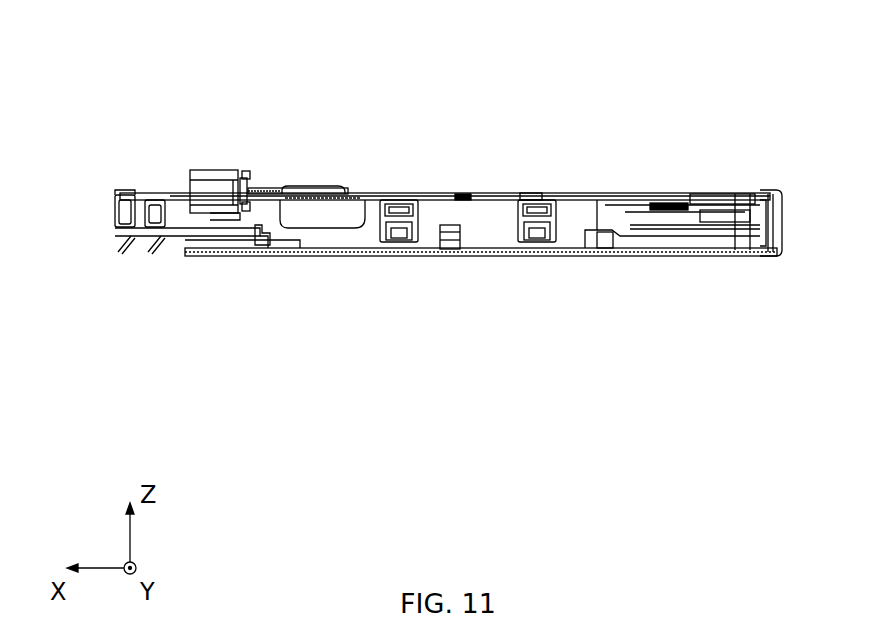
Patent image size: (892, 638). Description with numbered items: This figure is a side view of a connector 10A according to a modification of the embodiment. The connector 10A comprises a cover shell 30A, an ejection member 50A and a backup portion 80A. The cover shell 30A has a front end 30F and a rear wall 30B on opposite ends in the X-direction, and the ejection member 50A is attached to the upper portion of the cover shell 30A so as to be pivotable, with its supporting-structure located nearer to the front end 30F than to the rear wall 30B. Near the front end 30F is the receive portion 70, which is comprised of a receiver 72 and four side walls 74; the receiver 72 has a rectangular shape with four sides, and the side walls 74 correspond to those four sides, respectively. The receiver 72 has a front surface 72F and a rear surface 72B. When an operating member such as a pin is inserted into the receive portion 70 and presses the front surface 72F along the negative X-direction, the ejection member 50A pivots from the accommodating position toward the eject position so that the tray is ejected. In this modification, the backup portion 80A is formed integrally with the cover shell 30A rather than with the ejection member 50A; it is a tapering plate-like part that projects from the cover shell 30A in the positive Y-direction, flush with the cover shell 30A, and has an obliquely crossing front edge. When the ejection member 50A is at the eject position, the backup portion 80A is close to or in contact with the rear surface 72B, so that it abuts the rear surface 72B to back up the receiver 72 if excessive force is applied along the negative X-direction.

The connector 10A is at (446, 225).
The cover shell 30A is at (436, 197).
The front end 30F is at (115, 196).
The rear wall 30B is at (780, 222).
The ejection member 50A is at (265, 186).
The backup portion 80A is at (326, 190).
The side walls 74 is at (206, 195).
The receiver 72 is at (243, 121).
The front surface 72F is at (243, 178).
The rear surface 72B is at (250, 171).
The receive portion 70 is at (228, 213).